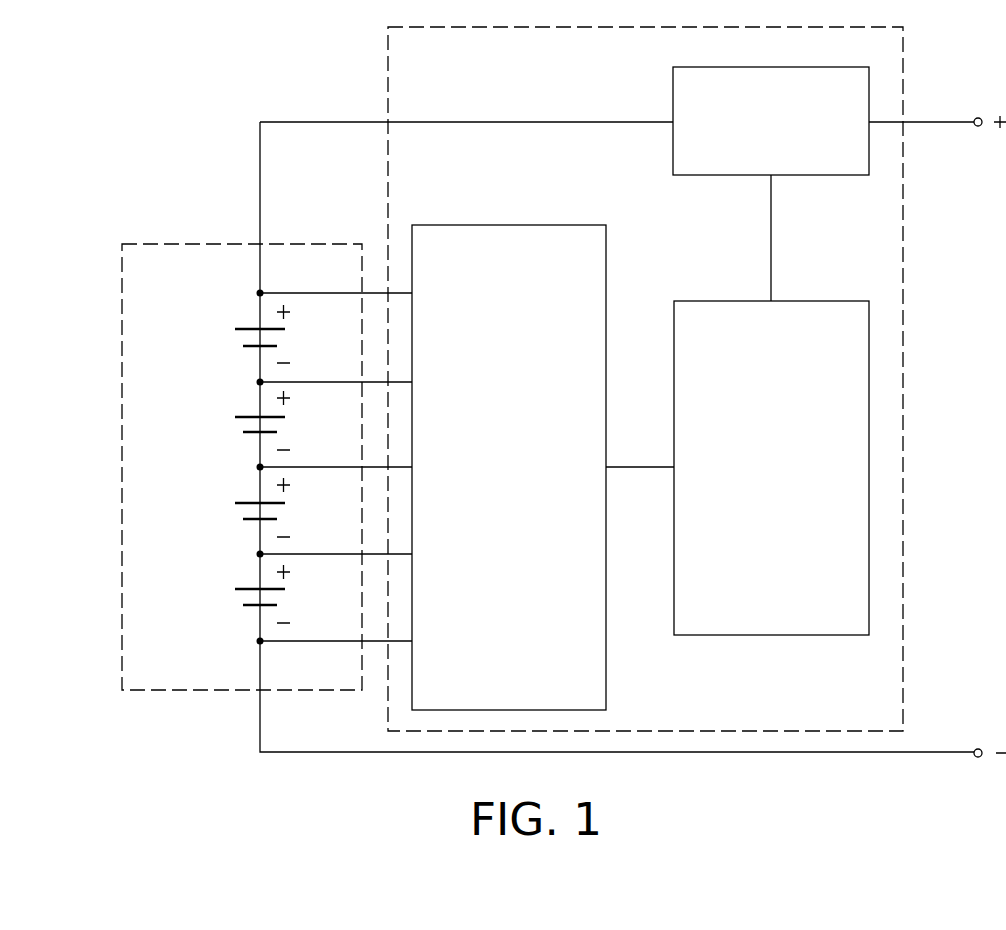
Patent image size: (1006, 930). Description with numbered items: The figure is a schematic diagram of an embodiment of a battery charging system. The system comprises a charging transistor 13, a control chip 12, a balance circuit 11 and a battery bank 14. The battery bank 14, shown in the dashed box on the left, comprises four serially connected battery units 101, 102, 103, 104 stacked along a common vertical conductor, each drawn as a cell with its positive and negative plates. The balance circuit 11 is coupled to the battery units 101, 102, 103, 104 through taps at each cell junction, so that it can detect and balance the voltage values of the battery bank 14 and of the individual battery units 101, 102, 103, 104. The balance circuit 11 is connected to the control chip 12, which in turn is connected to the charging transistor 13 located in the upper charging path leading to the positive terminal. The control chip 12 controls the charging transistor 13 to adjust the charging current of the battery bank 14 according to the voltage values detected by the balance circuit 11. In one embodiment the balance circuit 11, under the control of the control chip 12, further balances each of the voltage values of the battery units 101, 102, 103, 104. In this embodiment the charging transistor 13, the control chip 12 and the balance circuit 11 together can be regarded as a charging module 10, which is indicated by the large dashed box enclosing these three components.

The charging module 10 is at (903, 378).
The balance circuit 11 is at (412, 222).
The control chip 12 is at (674, 299).
The charging transistor 13 is at (673, 65).
The battery bank 14 is at (122, 470).
The battery unit 101 is at (243, 337).
The battery unit 102 is at (243, 423).
The battery unit 103 is at (243, 510).
The battery unit 104 is at (243, 596).